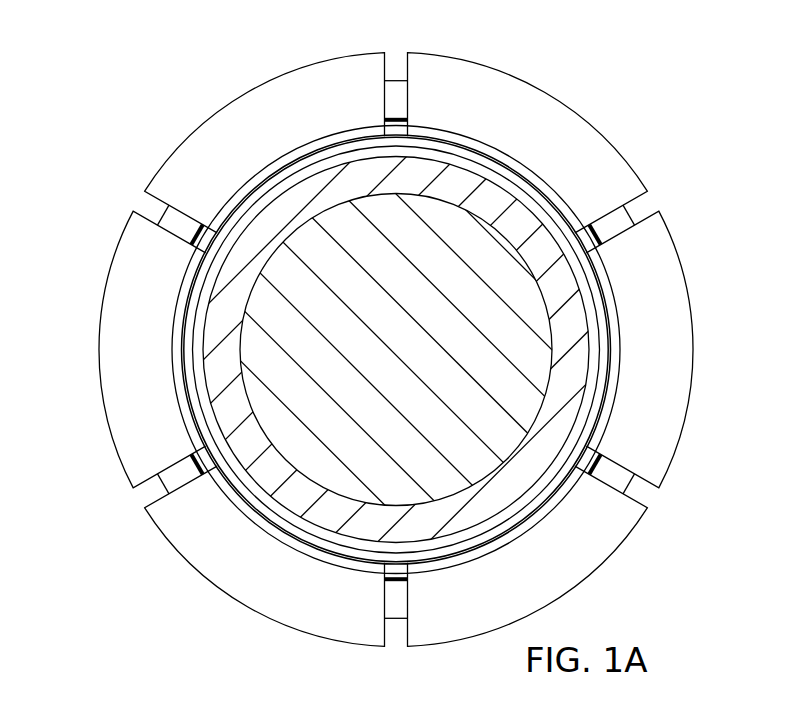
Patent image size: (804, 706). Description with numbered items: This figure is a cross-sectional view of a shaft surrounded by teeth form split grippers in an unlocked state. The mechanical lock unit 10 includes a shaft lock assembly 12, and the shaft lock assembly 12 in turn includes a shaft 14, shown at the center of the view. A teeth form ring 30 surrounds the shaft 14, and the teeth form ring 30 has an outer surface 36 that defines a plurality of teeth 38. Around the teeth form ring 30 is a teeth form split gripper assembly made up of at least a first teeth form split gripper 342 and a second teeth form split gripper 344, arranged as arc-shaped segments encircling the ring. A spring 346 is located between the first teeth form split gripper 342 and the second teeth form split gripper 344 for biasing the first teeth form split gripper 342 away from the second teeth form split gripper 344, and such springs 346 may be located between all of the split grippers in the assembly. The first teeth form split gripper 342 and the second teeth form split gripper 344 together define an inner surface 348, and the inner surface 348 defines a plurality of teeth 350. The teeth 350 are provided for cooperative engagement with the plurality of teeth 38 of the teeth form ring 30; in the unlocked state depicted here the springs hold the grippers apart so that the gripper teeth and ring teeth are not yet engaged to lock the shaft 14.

The mechanical lock unit 10 is at (178, 68).
The shaft lock assembly 12 is at (96, 343).
The shaft 14 is at (381, 363).
The teeth form ring 30 is at (533, 235).
The outer surface 36 is at (499, 172).
The plurality of teeth 38 is at (458, 153).
The first teeth form split gripper 342 is at (237, 598).
The second teeth form split gripper 344 is at (103, 395).
The spring 346 is at (180, 226).
The inner surface 348 is at (300, 538).
The plurality of teeth 350 is at (352, 556).